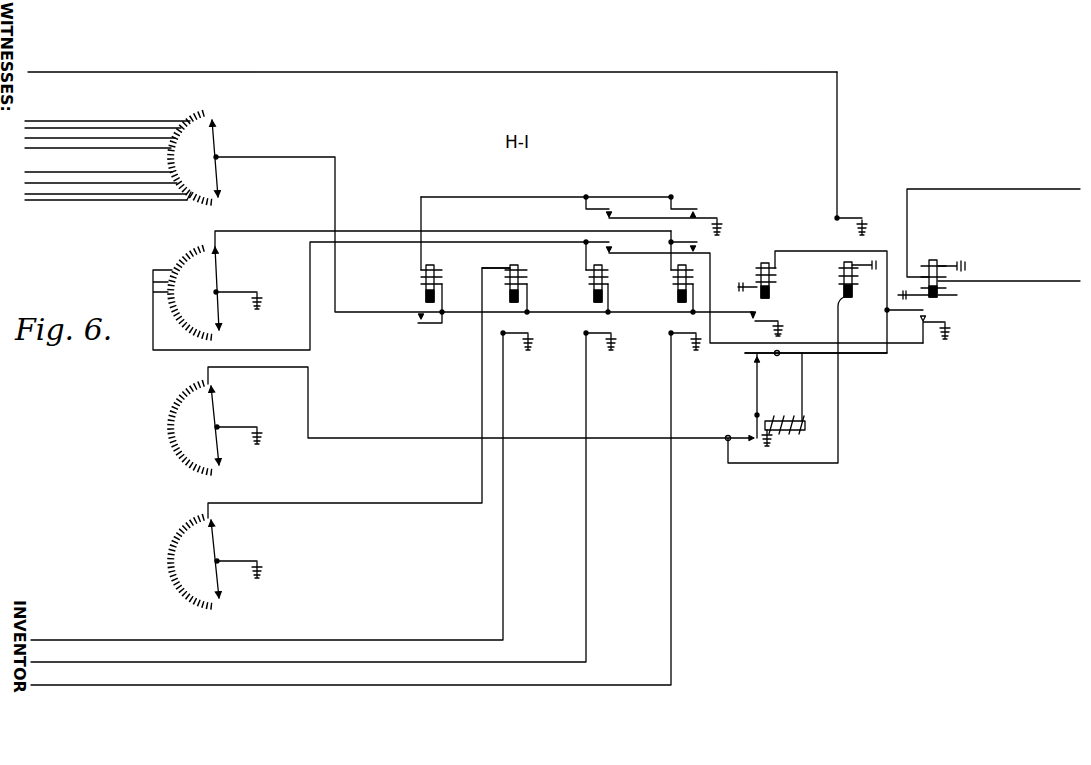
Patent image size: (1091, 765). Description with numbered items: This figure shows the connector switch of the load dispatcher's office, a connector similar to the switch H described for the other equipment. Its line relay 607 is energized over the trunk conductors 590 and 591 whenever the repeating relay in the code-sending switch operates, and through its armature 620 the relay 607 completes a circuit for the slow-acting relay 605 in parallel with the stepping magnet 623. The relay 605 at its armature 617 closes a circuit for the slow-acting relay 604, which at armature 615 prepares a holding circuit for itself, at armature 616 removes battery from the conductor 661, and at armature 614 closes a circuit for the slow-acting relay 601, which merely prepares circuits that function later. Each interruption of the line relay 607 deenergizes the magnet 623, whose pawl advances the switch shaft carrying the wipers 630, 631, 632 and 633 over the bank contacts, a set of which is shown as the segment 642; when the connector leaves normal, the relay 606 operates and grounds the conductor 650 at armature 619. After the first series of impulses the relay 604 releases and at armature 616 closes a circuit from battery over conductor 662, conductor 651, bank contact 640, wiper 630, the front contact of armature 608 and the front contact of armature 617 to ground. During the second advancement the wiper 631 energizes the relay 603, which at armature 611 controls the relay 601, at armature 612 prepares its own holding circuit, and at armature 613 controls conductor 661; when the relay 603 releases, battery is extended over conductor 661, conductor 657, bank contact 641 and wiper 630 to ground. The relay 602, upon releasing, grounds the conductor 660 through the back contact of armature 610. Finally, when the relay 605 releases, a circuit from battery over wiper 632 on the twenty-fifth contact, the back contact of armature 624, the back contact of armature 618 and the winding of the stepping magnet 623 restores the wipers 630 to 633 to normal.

The trunk conductor 590 is at (1071, 189).
The trunk conductor 591 is at (1068, 281).
The slow-acting relay 601 is at (441, 281).
The relay 602 is at (525, 281).
The slow-acting relay 603 is at (609, 281).
The slow-acting relay 604 is at (695, 281).
The slow-acting relay 605 is at (773, 287).
The relay 606 is at (852, 297).
The line relay 607 is at (942, 282).
The armature 608 is at (430, 323).
The armature 610 is at (525, 331).
The armature 611 is at (600, 208).
The armature 612 is at (612, 242).
The armature 613 is at (598, 331).
The armature 614 is at (683, 208).
The armature 615 is at (700, 240).
The armature 616 is at (681, 331).
The armature 617 is at (756, 323).
The armature 618 is at (755, 359).
The armature 619 is at (852, 218).
The armature 620 is at (926, 325).
The stepping magnet 623 is at (784, 416).
The armature 624 is at (755, 426).
The wiper 630 is at (218, 157).
The wiper 631 is at (220, 292).
The wiper 632 is at (219, 414).
The wiper 633 is at (219, 549).
The bank contact 640 is at (198, 115).
The bank contact 641 is at (186, 202).
The contact segment 642 is at (184, 262).
The conductor 650 is at (92, 64).
The conductor 651 is at (79, 121).
The conductor 657 is at (38, 192).
The conductor 660 is at (77, 640).
The conductor 661 is at (104, 662).
The conductor 662 is at (92, 686).